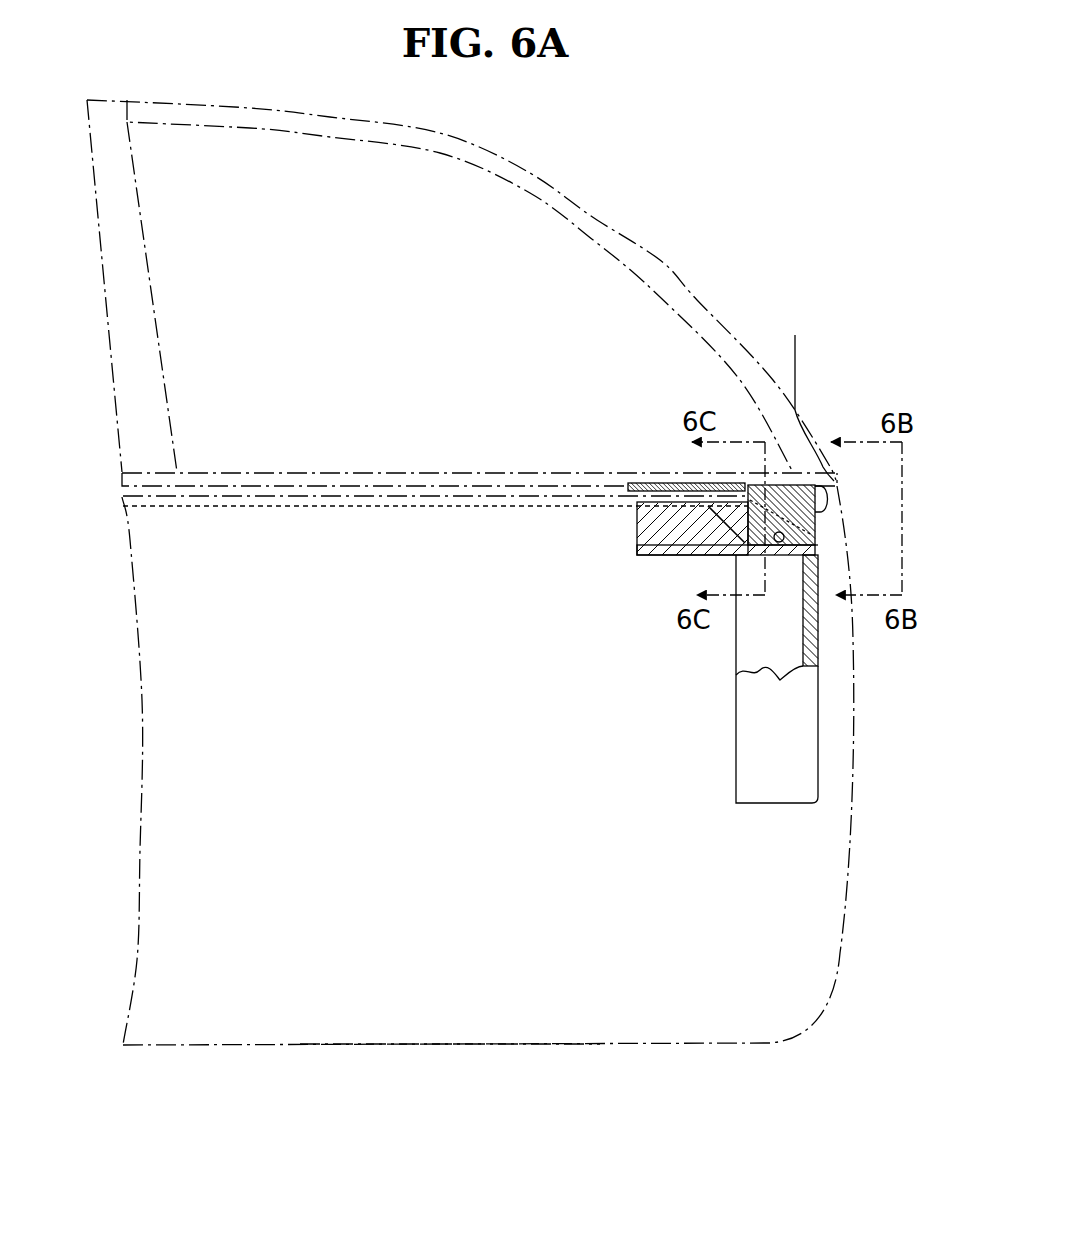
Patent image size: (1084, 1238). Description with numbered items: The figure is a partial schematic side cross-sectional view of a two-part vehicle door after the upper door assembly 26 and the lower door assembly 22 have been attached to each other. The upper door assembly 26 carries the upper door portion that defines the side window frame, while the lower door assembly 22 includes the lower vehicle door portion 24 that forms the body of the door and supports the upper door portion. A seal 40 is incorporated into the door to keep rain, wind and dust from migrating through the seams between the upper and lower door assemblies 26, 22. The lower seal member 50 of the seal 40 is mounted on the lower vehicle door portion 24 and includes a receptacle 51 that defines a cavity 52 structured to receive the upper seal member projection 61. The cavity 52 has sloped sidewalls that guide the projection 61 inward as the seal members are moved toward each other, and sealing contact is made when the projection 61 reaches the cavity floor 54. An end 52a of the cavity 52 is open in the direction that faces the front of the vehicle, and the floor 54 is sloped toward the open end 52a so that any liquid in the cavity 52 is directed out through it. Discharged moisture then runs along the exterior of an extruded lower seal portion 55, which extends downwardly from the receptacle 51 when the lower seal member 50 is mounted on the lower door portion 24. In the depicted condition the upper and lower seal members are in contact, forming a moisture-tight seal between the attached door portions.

The lower door assembly 22 is at (197, 1050).
The lower vehicle door portion 24 is at (173, 725).
The upper door assembly 26 is at (133, 365).
The seal 40 is at (824, 545).
The lower seal member 50 is at (824, 657).
The receptacle 51 is at (663, 542).
The cavity 52 is at (733, 518).
The open end 52a is at (830, 537).
The floor 54 is at (783, 548).
The extruded lower seal portion 55 is at (800, 718).
The upper seal member projection 61 is at (807, 397).